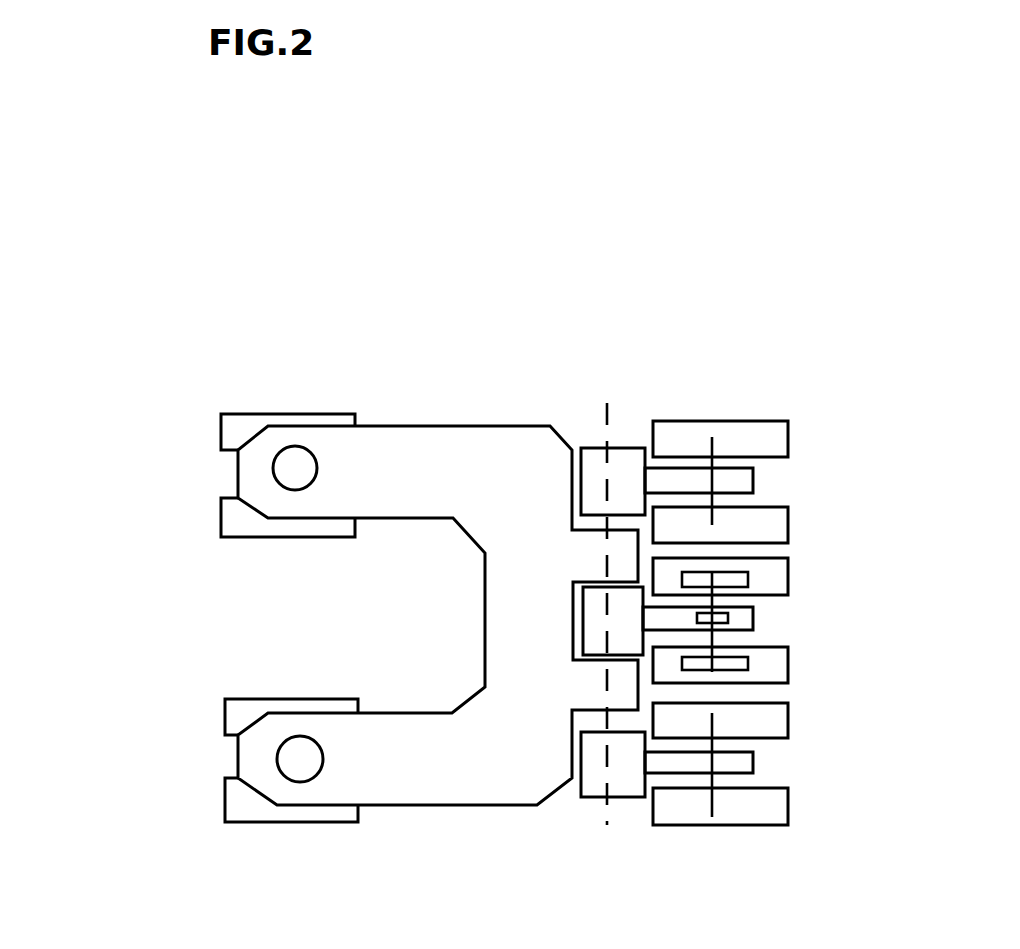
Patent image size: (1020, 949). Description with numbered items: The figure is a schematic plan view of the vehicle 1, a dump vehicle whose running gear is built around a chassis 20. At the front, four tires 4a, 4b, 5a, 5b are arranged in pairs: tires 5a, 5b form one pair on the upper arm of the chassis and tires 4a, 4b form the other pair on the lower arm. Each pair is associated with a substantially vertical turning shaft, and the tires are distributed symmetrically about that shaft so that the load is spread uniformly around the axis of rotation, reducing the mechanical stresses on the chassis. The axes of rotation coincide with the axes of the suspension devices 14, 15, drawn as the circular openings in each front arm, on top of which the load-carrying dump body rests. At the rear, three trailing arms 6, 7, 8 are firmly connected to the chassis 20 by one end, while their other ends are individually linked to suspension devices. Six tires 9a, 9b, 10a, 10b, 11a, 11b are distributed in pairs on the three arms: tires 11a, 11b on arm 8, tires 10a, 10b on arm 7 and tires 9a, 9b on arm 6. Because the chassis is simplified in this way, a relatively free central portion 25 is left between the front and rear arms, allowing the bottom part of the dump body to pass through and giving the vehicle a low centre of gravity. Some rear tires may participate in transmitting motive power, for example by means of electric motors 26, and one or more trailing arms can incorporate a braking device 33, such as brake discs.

The vehicle 1 is at (114, 614).
The chassis 20 is at (462, 448).
The central portion 25 is at (338, 618).
The tire 5a is at (228, 519).
The tire 5b is at (232, 424).
The tire 4a is at (235, 810).
The tire 4b is at (237, 715).
The suspension device 15 is at (302, 462).
The suspension device 14 is at (300, 775).
The trailing arm 8 is at (618, 466).
The trailing arm 7 is at (598, 625).
The trailing arm 6 is at (600, 780).
The tire 11a is at (783, 527).
The tire 11b is at (780, 432).
The tire 10a is at (787, 678).
The tire 10b is at (783, 583).
The tire 9a is at (762, 812).
The tire 9b is at (770, 730).
The electric motor 26 is at (748, 585).
The braking device 33 is at (697, 620).